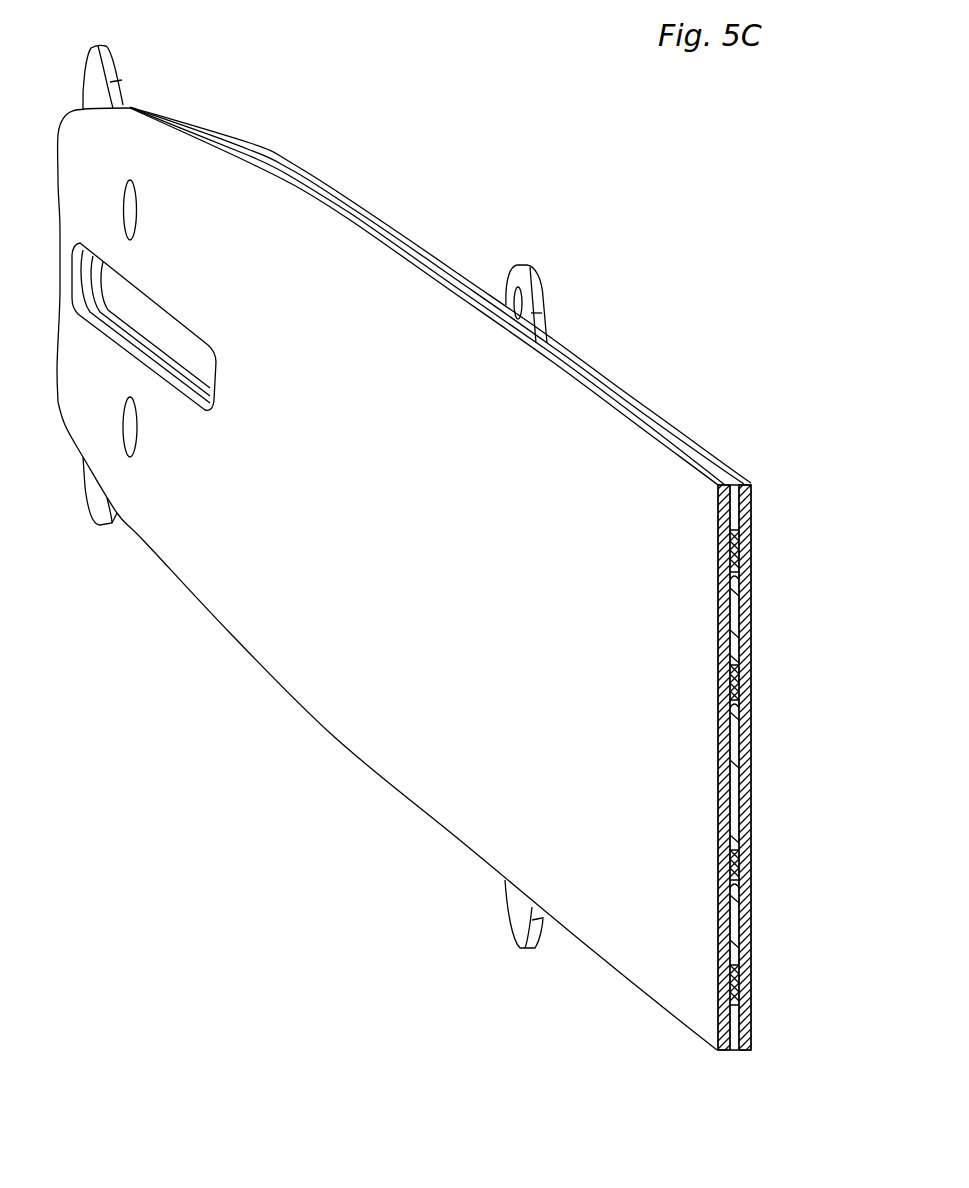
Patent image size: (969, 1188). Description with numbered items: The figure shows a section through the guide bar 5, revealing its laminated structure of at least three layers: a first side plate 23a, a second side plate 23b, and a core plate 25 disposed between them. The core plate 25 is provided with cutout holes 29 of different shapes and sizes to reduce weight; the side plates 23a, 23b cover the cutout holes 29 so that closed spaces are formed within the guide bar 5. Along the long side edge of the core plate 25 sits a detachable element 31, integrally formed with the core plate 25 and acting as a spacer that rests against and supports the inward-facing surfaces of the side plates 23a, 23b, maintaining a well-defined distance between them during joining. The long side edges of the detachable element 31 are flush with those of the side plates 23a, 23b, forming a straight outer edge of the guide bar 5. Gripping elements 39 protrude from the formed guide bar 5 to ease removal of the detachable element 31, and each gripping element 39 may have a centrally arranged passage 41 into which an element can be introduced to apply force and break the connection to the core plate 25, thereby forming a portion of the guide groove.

The guide bar 5 is at (418, 96).
The detachable element 31 is at (722, 478).
The gripping element 39 is at (530, 270).
The passage 41 is at (512, 303).
The first side plate 23a is at (721, 522).
The second side plate 23b is at (750, 512).
The core plate 25 is at (741, 560).
The cutout holes 29 is at (737, 743).